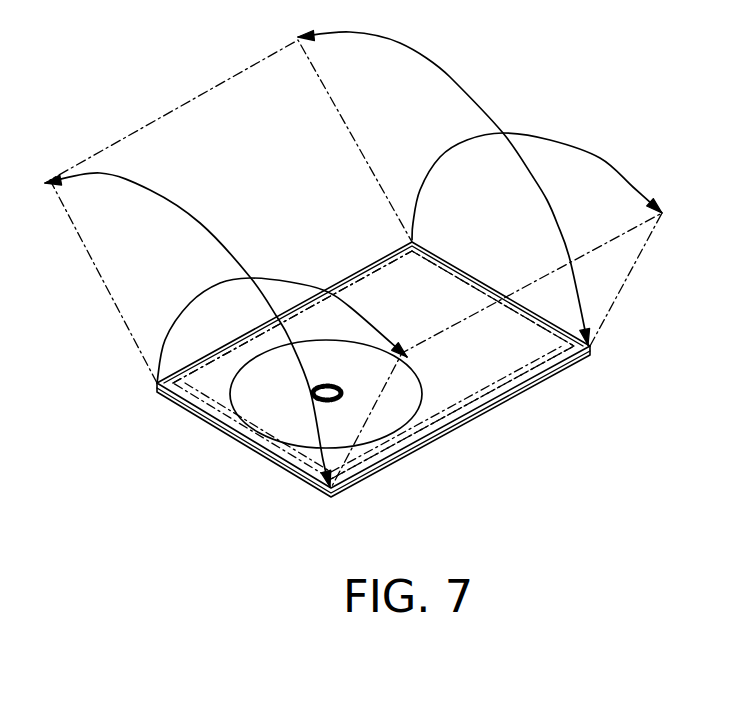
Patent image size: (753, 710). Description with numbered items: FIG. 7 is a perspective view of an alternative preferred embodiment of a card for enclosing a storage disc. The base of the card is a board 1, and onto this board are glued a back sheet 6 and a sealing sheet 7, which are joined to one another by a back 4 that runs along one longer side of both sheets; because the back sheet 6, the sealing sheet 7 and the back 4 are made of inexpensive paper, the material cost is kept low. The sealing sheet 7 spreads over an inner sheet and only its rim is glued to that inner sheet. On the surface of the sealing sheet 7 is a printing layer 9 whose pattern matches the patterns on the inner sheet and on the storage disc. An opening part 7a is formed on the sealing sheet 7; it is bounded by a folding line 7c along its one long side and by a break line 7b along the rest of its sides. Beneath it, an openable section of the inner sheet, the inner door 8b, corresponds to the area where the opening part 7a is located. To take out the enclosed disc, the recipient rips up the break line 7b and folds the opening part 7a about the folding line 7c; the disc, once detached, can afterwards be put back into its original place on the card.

The board 1 is at (243, 448).
The back 4 is at (433, 437).
The back sheet 6 is at (303, 484).
The sealing sheet 7 is at (508, 404).
The opening part 7a is at (537, 333).
The break line 7b is at (372, 272).
The folding line 7c is at (540, 368).
The inner door 8b is at (158, 119).
The printing layer 9 is at (434, 402).